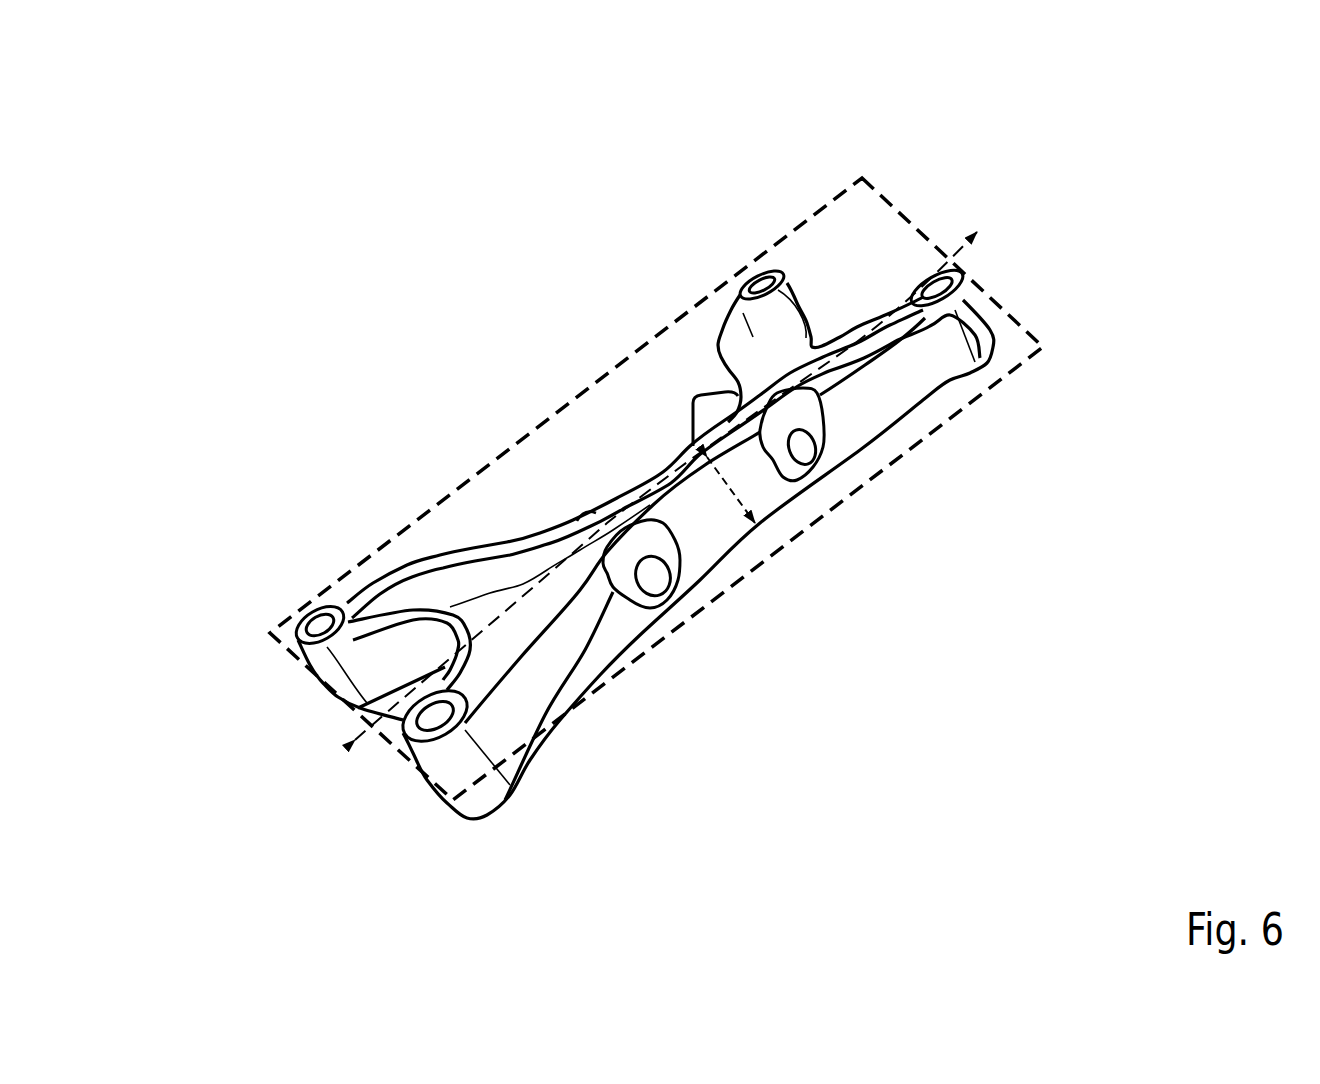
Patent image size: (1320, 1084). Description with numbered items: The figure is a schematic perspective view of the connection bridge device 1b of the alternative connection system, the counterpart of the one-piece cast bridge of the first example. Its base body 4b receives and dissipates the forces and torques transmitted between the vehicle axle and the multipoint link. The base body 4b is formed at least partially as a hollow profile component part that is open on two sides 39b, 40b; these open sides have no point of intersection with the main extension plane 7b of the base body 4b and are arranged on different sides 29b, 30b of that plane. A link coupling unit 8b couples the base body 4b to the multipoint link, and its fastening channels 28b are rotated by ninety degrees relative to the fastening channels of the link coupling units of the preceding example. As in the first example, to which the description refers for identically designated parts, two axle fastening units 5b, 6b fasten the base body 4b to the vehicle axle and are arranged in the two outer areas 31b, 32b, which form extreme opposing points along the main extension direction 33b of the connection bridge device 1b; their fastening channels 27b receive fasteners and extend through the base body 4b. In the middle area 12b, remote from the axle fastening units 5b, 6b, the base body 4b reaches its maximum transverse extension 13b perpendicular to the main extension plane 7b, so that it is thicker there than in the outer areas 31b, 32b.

The connection bridge device 1b is at (1098, 262).
The base body 4b is at (605, 643).
The axle fastening unit 5b is at (370, 712).
The axle fastening unit 6b is at (840, 290).
The main extension plane 7b is at (468, 477).
The link coupling unit 8b is at (853, 470).
The middle area 12b is at (773, 533).
The transverse extension 13b is at (745, 500).
The fastening channels 27b is at (757, 278).
The fastening channels 28b is at (812, 446).
The side of the main extension plane 29b is at (613, 427).
The side of the main extension plane 30b is at (750, 615).
The outer area 31b is at (374, 765).
The outer area 32b is at (997, 257).
The main extension direction 33b is at (360, 752).
The open side 39b is at (753, 548).
The open side 40b is at (673, 434).